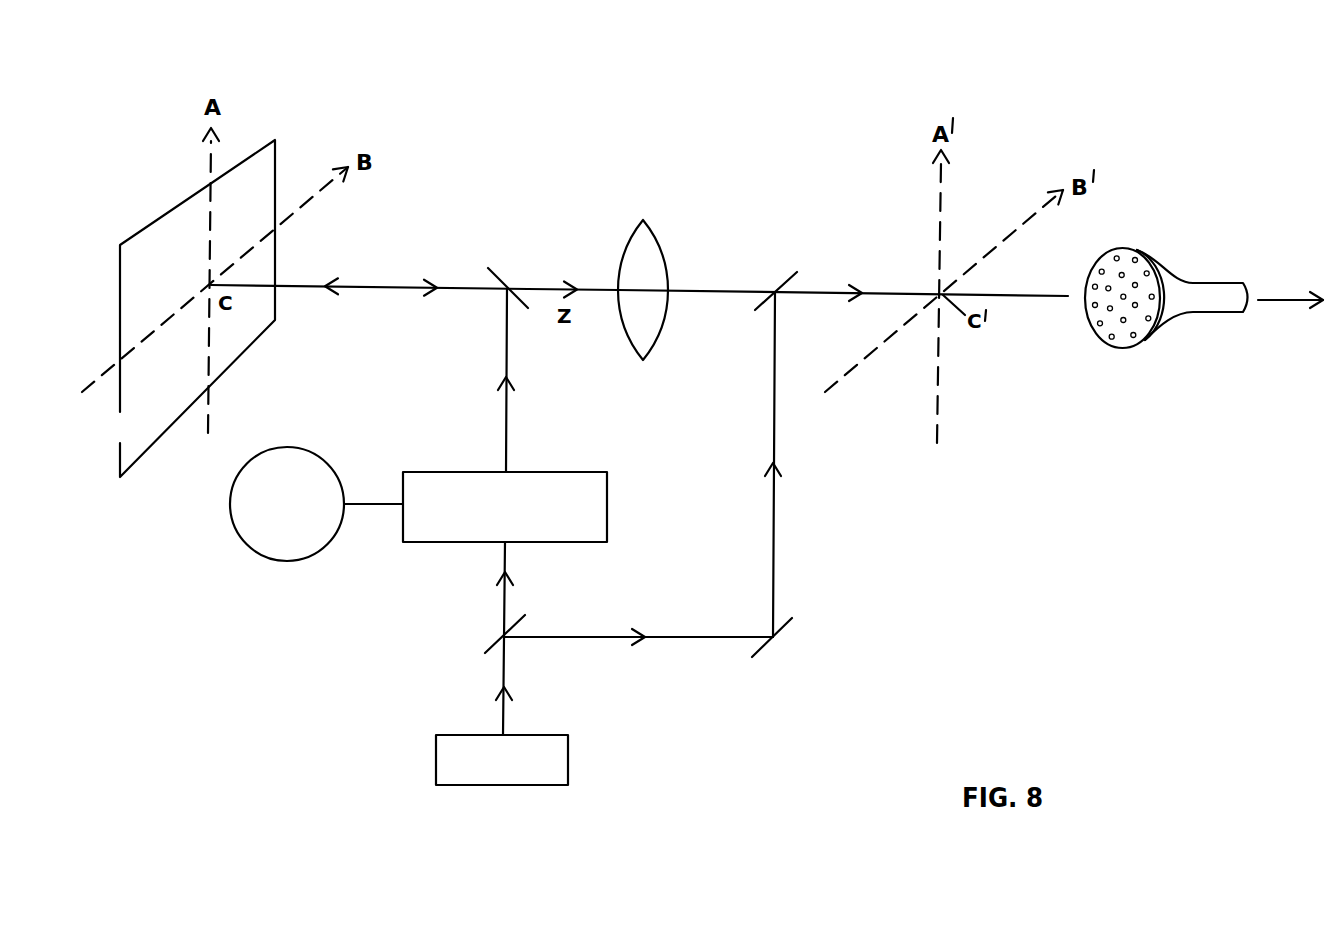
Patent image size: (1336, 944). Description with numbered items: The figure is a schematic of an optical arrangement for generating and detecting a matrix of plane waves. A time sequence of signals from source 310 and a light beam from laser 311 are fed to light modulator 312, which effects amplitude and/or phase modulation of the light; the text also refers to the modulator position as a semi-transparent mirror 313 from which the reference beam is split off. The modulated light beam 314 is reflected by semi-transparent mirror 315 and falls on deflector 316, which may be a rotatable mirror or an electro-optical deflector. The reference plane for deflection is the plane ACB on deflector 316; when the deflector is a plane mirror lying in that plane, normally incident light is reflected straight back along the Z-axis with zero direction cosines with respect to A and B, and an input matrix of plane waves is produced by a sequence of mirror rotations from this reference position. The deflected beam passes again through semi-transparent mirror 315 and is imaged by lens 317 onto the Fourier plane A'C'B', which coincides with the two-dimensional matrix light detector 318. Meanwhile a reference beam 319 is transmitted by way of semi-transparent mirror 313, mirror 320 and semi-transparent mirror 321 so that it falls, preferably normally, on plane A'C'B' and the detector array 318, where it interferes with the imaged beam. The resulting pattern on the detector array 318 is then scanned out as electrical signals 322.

The source 310 is at (310, 557).
The laser 311 is at (568, 763).
The light modulator 312 is at (608, 502).
The light modulator / semi-transparent mirror 313 is at (488, 643).
The light beam 314 is at (594, 288).
The semi-transparent mirror 315 is at (490, 268).
The deflector 316 is at (155, 443).
The lens 317 is at (655, 347).
The two-dimensional matrix light detector 318 is at (1163, 330).
The reference beam 319 is at (607, 640).
The mirror 320 is at (767, 650).
The semi-transparent mirror 321 is at (785, 281).
The electrical signals 322 is at (1278, 303).